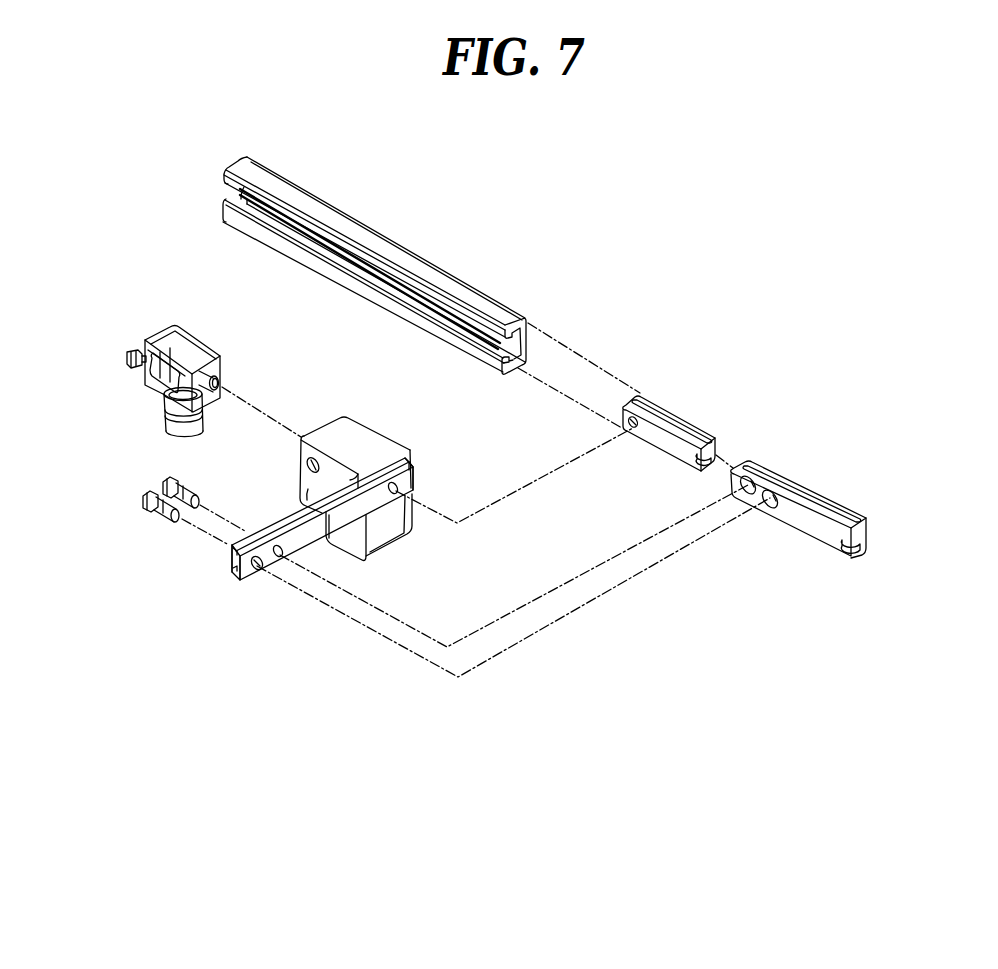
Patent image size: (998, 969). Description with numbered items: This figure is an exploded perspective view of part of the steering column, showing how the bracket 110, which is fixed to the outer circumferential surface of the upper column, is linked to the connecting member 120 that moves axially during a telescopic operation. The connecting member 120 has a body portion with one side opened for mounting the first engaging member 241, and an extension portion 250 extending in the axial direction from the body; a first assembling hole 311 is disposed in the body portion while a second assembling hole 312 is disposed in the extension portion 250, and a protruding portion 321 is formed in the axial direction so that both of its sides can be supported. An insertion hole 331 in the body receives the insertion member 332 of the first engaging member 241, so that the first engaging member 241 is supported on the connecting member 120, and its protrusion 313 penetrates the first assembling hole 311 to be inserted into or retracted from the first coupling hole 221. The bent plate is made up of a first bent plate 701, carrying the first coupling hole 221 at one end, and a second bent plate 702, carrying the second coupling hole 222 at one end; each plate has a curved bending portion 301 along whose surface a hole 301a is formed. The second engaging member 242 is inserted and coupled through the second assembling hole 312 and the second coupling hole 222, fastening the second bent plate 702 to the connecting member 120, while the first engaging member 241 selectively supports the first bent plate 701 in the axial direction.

The bracket 110 is at (447, 277).
The connecting member 120 is at (313, 443).
The first engaging member 241 is at (178, 368).
The second engaging member 242 is at (143, 497).
The extension portion 250 is at (316, 553).
The bending portion 301 is at (714, 439).
The hole 301a is at (710, 458).
The first assembling hole 311 is at (396, 492).
The second assembling hole 312 is at (258, 568).
The protrusion 313 is at (222, 380).
The protruding portion 321 is at (410, 473).
The insertion hole 331 is at (306, 463).
The insertion member 332 is at (125, 355).
The first coupling hole 221 is at (632, 429).
The second coupling hole 222 is at (768, 507).
The first bent plate 701 is at (772, 439).
The second bent plate 702 is at (787, 510).